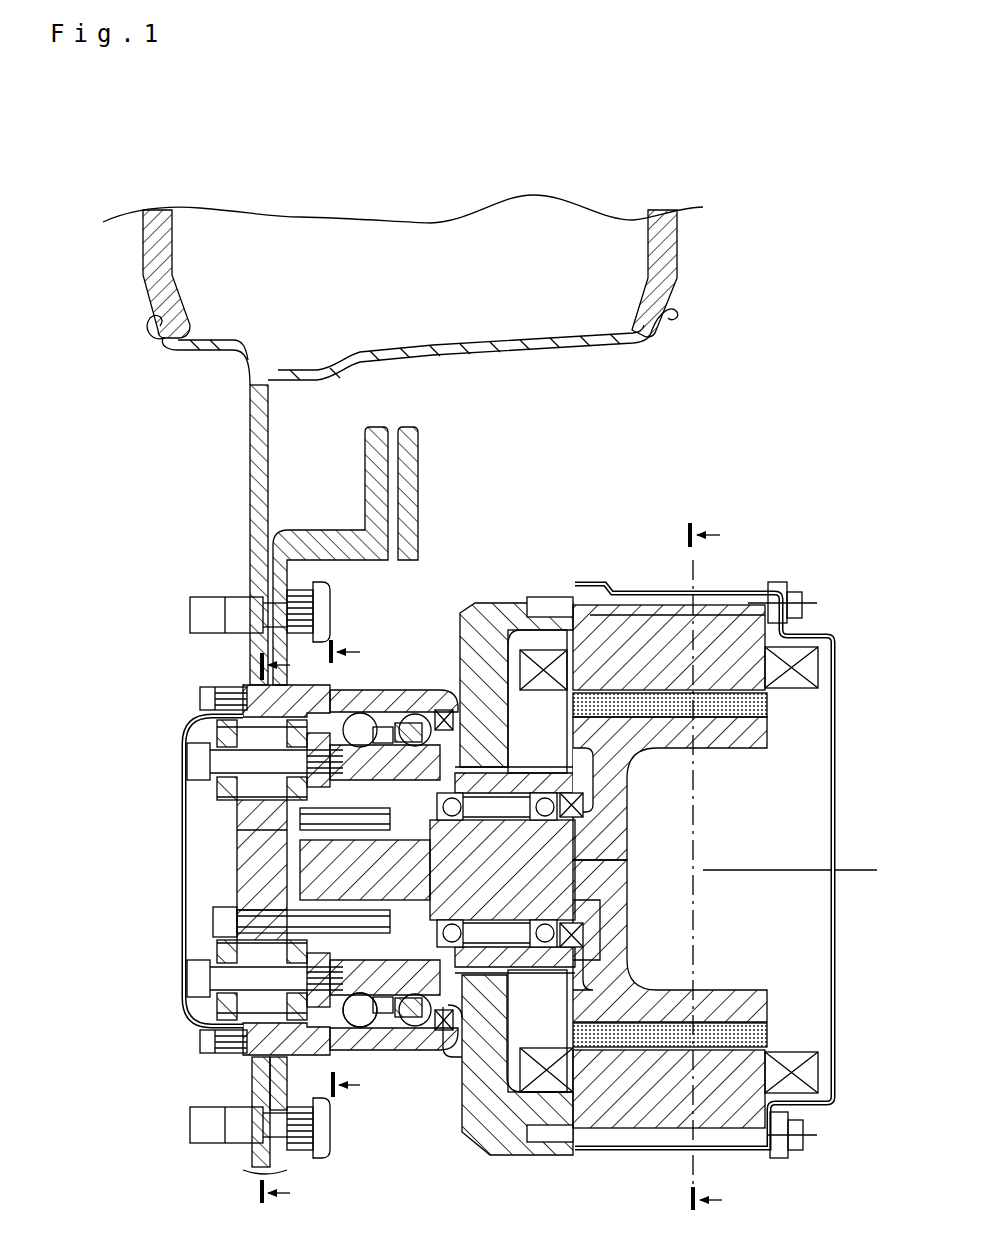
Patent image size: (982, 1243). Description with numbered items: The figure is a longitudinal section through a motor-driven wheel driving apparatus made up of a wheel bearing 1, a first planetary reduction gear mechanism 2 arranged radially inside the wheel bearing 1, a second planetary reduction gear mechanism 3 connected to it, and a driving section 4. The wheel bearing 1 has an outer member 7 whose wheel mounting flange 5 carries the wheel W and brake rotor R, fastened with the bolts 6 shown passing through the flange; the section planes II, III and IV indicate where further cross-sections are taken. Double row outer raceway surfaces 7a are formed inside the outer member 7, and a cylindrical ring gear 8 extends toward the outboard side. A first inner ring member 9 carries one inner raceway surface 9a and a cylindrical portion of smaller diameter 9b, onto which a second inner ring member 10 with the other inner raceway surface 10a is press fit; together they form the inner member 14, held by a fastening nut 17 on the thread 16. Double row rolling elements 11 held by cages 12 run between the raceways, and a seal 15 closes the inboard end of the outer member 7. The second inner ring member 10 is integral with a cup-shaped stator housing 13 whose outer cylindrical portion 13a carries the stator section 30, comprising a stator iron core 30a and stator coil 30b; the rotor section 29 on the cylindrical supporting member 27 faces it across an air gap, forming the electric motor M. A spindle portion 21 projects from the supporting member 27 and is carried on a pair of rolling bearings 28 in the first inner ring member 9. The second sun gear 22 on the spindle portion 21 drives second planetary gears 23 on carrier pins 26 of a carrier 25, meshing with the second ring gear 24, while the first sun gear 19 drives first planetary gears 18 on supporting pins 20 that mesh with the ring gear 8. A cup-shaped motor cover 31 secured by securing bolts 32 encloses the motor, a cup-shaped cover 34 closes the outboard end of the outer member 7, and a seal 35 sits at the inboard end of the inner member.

The wheel bearing 1 is at (240, 677).
The first planetary reduction gear mechanism 2 is at (225, 883).
The second planetary reduction gear mechanism 3 is at (210, 1017).
The driving section 4 is at (637, 857).
The wheel mounting flange 5 is at (263, 553).
The hub bolt 6 is at (233, 613).
The outer member 7 is at (425, 700).
The outer raceway surface 7a is at (388, 728).
The ring gear 8 is at (203, 690).
The first inner ring member 9 is at (323, 745).
The inner raceway surface 9a is at (305, 1125).
The cylindrical portion of smaller diameter 9b is at (563, 972).
The second inner ring member 10 is at (520, 650).
The other inner raceway surface 10a is at (427, 1015).
The rolling elements 11 is at (413, 1028).
The cage 12 is at (413, 712).
The stator housing 13 is at (482, 648).
The outer cylindrical portion 13a is at (543, 592).
The inner member 14 is at (537, 701).
The seal 15 is at (482, 1095).
The thread 16 is at (602, 747).
The fastening nut 17 is at (520, 993).
The first planetary gear 18 is at (245, 790).
The first sun gear 19 is at (243, 853).
The supporting pin 20 is at (220, 975).
The spindle portion 21 is at (560, 880).
The second sun gear 22 is at (327, 883).
The second planetary gear 23 is at (440, 810).
The second ring gear 24 is at (330, 1035).
The carrier 25 is at (502, 870).
The carrier pin 26 is at (247, 923).
The supporting member 27 is at (673, 733).
The rolling bearing 28 is at (458, 818).
The rotor section 29 is at (730, 707).
The stator section 30 is at (625, 507).
The stator iron core 30a is at (623, 640).
The stator coil 30b is at (553, 640).
The motor cover 31 is at (837, 787).
The securing bolt 32 is at (778, 600).
The cover 34 is at (210, 1015).
The seal 35 is at (577, 938).
The wheel W is at (258, 413).
The brake rotor R is at (312, 543).
The electric motor M is at (790, 1035).
The section line II is at (307, 663).
The section line III is at (382, 653).
The section line IV is at (740, 534).